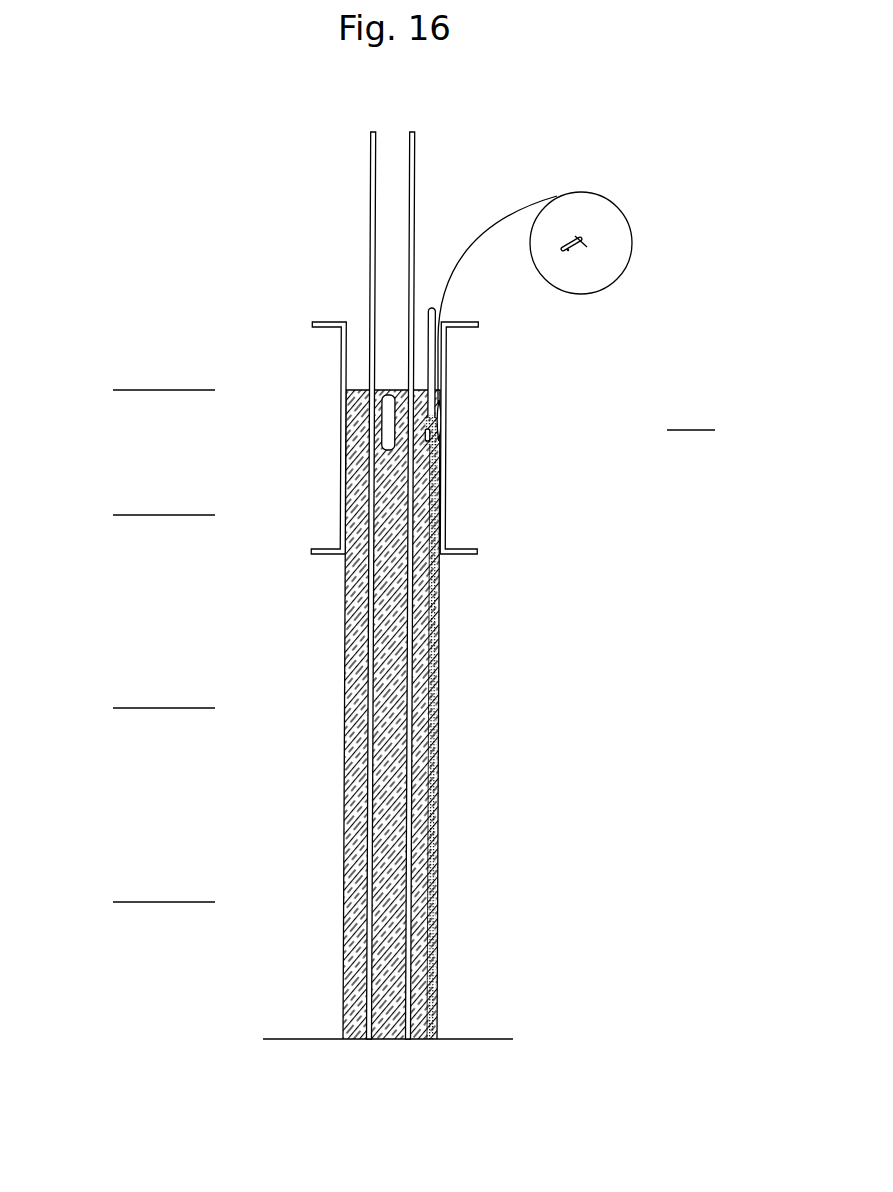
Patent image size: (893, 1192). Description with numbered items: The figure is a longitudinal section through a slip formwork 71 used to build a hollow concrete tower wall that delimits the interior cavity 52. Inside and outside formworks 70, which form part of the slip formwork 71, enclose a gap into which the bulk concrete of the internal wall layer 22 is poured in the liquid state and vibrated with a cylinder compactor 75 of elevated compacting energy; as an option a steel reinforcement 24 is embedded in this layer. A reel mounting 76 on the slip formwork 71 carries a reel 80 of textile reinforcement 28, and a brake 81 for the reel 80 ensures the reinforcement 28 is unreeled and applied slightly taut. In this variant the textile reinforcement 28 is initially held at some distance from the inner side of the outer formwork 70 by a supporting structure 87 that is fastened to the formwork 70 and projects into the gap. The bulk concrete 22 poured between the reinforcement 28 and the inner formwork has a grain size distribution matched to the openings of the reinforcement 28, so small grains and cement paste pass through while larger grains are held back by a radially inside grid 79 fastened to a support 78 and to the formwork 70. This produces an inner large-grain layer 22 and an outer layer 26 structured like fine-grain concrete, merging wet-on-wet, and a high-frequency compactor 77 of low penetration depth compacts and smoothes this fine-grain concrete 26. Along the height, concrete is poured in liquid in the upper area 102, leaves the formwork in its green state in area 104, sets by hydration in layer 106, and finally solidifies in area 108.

The internal wall layer 22 is at (350, 405).
The steel reinforcement 24 is at (411, 165).
The fine-grain concrete 26 is at (440, 637).
The textile reinforcement 28 is at (440, 592).
The cavity 52 is at (280, 785).
The formworks 70 is at (318, 323).
The slip formwork 71 is at (678, 424).
The cylinder compactor 75 is at (391, 394).
The reel mounting 76 is at (585, 243).
The high-frequency compactor 77 is at (437, 433).
The support 78 is at (434, 389).
The grid 79 is at (447, 460).
The reel 80 is at (603, 216).
The brake 81 is at (568, 252).
The supporting structure 87 is at (441, 413).
The area 102 is at (130, 451).
The area 104 is at (130, 612).
The layer 106 is at (130, 809).
The area 108 is at (130, 941).